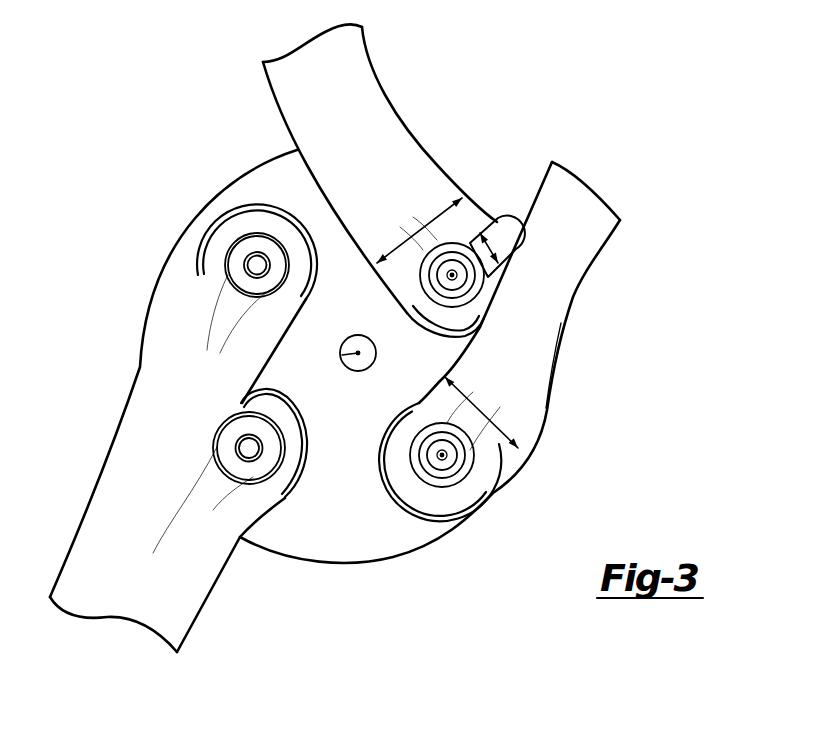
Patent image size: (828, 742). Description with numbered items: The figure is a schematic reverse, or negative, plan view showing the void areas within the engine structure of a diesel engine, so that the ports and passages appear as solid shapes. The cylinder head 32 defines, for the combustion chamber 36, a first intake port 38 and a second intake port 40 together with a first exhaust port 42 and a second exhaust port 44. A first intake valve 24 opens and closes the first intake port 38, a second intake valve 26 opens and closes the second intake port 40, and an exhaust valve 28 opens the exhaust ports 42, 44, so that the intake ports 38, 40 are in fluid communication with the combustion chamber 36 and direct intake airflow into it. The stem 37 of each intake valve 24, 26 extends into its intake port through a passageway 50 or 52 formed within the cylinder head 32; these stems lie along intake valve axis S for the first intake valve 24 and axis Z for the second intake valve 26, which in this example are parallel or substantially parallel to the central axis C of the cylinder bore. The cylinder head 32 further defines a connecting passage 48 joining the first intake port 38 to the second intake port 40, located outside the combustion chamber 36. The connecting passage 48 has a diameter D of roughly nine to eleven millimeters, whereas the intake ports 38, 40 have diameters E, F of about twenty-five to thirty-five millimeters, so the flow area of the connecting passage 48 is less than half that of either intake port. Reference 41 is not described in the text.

The first intake valve 24 is at (462, 475).
The second intake valve 26 is at (258, 240).
The exhaust valve 28 is at (274, 449).
The cylinder head 32 is at (342, 548).
The combustion chamber 36 is at (377, 567).
The stem 37 is at (452, 277).
The first intake port 38 is at (381, 483).
The second intake port 40 is at (466, 340).
The mounting hole 41 is at (245, 261).
The first exhaust port 42 is at (283, 400).
The second exhaust port 44 is at (287, 207).
The connecting passage 48 is at (498, 218).
The passageway 50 is at (443, 460).
The passageway 52 is at (427, 293).
The central axis C is at (358, 356).
The diameter D is at (497, 250).
The diameter E is at (492, 398).
The diameter F is at (443, 221).
The axis S is at (441, 453).
The axis Z is at (454, 277).